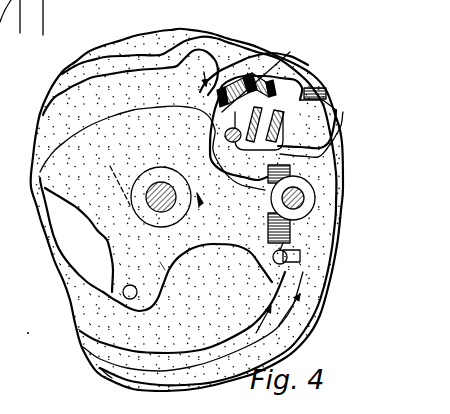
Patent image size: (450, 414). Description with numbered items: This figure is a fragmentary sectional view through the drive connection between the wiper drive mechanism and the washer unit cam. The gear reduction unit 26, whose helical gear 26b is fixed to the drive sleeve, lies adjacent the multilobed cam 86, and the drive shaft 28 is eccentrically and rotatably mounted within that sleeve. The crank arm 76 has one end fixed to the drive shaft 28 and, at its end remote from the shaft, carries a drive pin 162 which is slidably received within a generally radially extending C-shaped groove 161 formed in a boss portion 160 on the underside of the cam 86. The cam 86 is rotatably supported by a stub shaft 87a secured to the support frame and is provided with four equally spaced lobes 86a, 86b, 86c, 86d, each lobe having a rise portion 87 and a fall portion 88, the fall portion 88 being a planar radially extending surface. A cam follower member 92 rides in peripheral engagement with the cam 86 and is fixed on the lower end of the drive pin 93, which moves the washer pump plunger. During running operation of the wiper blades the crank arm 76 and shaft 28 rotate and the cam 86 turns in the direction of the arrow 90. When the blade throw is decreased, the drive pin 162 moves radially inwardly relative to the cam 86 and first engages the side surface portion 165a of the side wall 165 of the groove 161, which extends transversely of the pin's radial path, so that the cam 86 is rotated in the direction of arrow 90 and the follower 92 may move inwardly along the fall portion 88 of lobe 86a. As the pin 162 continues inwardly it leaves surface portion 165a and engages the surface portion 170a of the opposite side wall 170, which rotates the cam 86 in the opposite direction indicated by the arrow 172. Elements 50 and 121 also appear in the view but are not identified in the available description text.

The gear reduction unit 26 is at (61, 73).
The helical gear 26b is at (108, 368).
The drive shaft 28 is at (110, 179).
The cover plate 50 is at (200, 70).
The crank arm 76 is at (80, 240).
The multilobed cam 86 is at (73, 138).
The lobe 86a is at (222, 297).
The lobe 86b is at (135, 308).
The lobe 86c is at (45, 204).
The lobe 86d is at (160, 82).
The rise portion 87 is at (195, 72).
The stub shaft 87a is at (158, 184).
The fall portion 88 is at (163, 265).
The arrow 90 is at (276, 300).
The cam follower member 92 is at (298, 228).
The drive pin 93 is at (278, 200).
The stop 121 is at (201, 205).
The boss portion 160 is at (250, 74).
The C-shaped groove 161 is at (298, 88).
The drive pin 162 is at (213, 140).
The side wall 165 is at (292, 117).
The side surface portion 165a is at (314, 88).
The opposite side wall 170 is at (279, 112).
The surface portion 170a is at (164, 84).
The arrow 172 is at (285, 321).